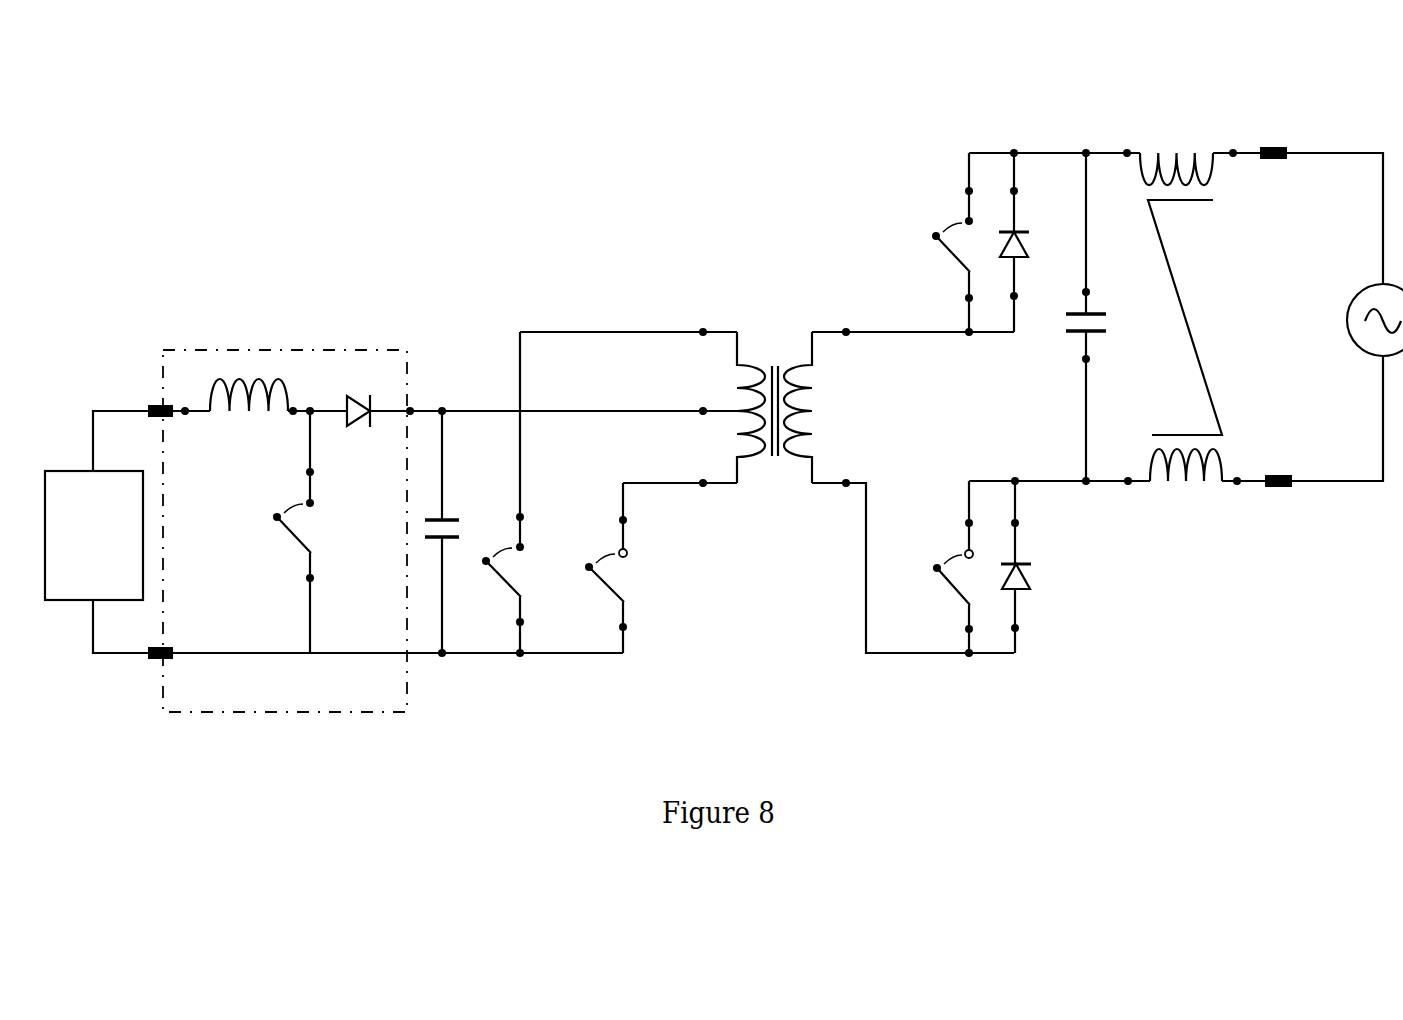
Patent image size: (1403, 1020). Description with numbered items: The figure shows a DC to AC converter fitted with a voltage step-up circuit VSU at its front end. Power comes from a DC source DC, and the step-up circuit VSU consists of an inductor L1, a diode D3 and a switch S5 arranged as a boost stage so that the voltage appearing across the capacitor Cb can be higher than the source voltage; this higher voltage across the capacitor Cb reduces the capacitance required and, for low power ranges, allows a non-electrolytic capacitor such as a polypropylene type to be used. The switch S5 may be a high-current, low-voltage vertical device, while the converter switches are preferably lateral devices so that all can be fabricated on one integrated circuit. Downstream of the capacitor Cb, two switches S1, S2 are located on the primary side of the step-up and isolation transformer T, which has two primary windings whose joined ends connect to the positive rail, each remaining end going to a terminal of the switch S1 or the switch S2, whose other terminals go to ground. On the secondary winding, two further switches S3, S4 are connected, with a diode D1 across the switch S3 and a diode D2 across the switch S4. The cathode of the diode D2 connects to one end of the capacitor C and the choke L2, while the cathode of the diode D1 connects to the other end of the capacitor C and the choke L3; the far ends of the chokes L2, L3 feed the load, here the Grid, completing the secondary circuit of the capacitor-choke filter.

The DC source DC is at (94, 535).
The voltage step-up circuit VSU is at (288, 338).
The inductor L1 is at (249, 414).
The diode D3 is at (362, 427).
The switch S5 is at (310, 532).
The capacitor Cb is at (452, 532).
The switch S1 is at (503, 492).
The switch S2 is at (605, 568).
The step-up and isolation transformer T is at (774, 394).
The switch S4 is at (951, 242).
The diode D2 is at (1030, 242).
The switch S3 is at (952, 567).
The diode D1 is at (1029, 567).
The capacitor C is at (1096, 317).
The choke L2 is at (1176, 152).
The choke L3 is at (1186, 481).
The load Grid is at (1366, 307).